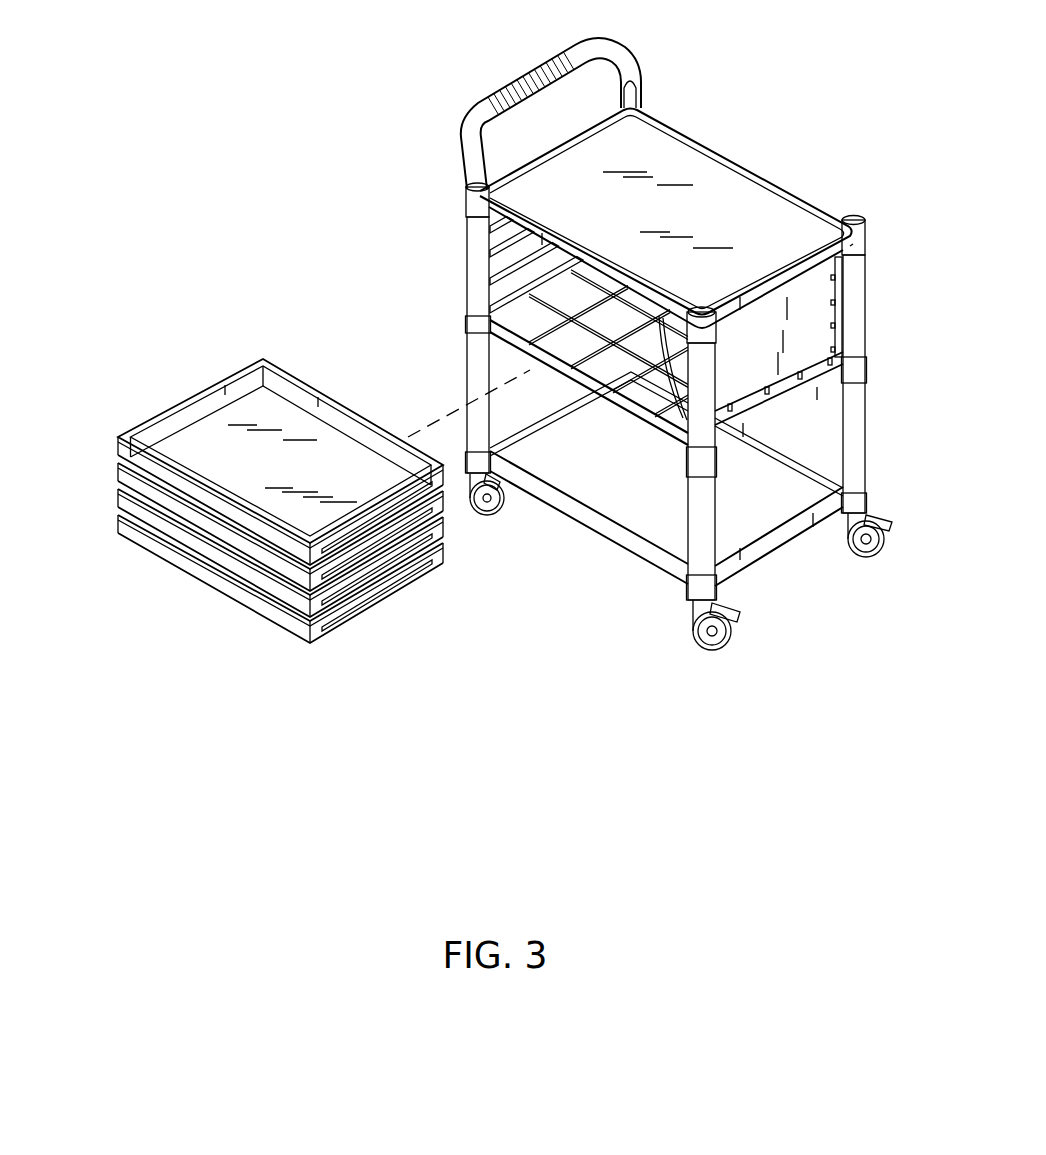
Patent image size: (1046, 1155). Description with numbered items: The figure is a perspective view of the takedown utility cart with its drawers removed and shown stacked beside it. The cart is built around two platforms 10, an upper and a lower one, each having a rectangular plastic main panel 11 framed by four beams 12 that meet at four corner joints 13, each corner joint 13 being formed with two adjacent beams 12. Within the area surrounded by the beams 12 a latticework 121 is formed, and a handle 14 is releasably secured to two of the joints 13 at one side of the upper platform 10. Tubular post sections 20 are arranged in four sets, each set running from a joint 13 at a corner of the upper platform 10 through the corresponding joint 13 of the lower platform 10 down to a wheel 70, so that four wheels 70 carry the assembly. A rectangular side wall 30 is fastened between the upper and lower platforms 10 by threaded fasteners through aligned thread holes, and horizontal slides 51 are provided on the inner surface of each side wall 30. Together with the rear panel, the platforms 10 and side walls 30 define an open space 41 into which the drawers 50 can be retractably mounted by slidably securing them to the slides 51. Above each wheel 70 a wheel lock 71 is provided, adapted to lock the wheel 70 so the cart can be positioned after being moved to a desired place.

The platform 10 is at (645, 155).
The main panel 11 is at (726, 200).
The beam 12 is at (542, 235).
The corner joint 13 is at (470, 203).
The handle 14 is at (527, 80).
The post section 20 is at (470, 233).
The side wall 30 is at (500, 277).
The open space 41 is at (598, 292).
The drawer 50 is at (256, 408).
The horizontal slide 51 is at (501, 260).
The wheel 70 is at (493, 523).
The wheel lock 71 is at (733, 612).
The latticework 121 is at (604, 404).